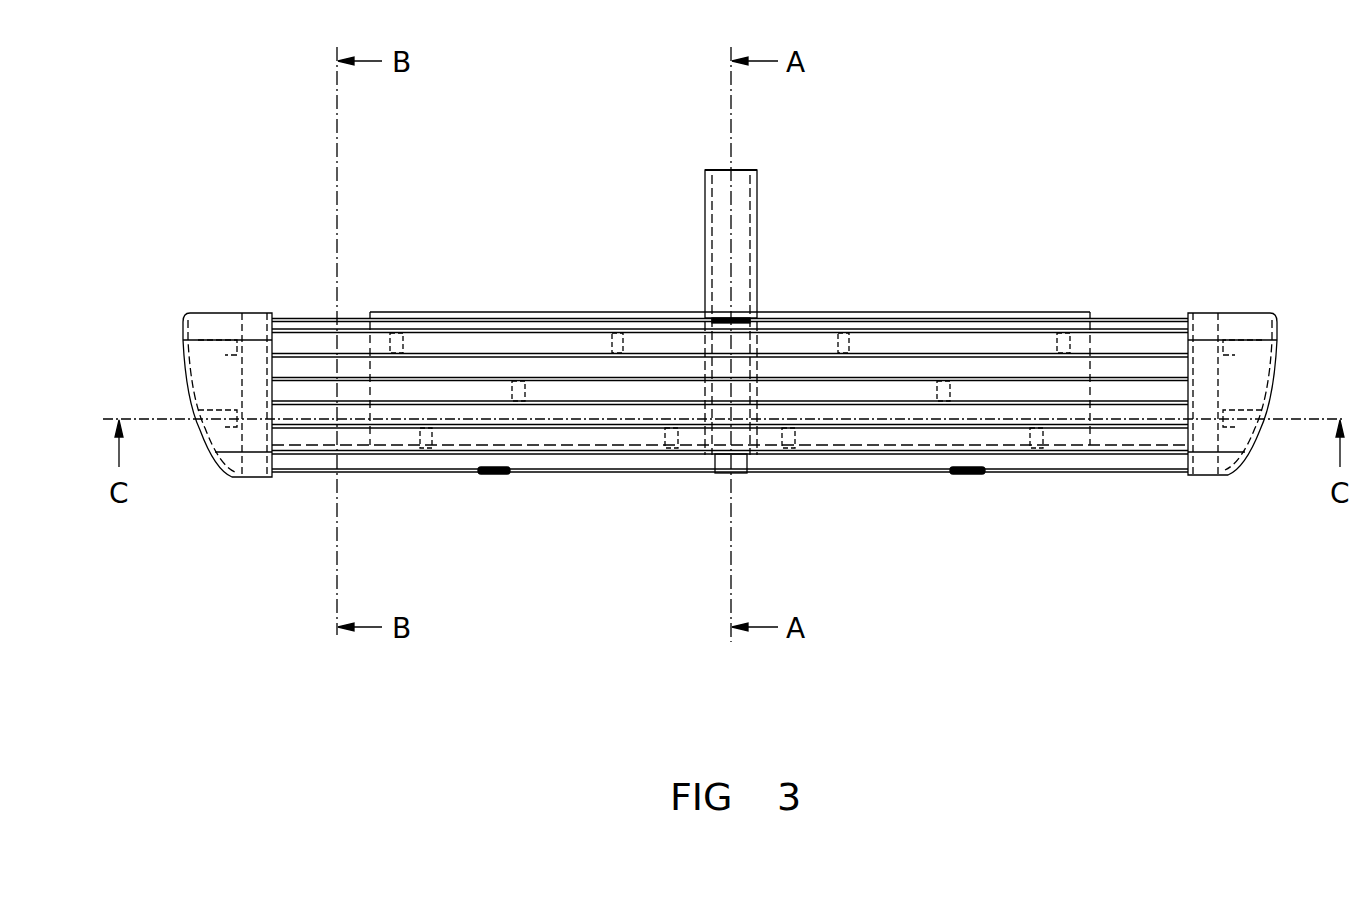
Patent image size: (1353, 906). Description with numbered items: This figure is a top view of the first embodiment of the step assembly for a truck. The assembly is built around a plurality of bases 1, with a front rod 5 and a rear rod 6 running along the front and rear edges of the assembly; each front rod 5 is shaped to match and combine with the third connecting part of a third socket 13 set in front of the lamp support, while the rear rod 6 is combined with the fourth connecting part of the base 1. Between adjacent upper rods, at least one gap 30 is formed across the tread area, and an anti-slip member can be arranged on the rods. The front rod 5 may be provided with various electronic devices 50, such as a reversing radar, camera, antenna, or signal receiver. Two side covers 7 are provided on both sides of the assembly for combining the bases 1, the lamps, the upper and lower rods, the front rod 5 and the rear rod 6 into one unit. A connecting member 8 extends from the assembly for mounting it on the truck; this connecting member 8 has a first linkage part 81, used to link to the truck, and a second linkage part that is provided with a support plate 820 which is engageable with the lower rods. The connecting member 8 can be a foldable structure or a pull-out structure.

The base 1 is at (730, 516).
The front rod 5 is at (730, 521).
The rear rod 6 is at (730, 270).
The side cover 7 is at (730, 335).
The connecting member 8 is at (778, 309).
The first linkage part 81 is at (713, 170).
The support plate 820 is at (575, 317).
The third socket 13 is at (740, 473).
The gap 30 is at (1058, 396).
The electronic device 50 is at (493, 474).